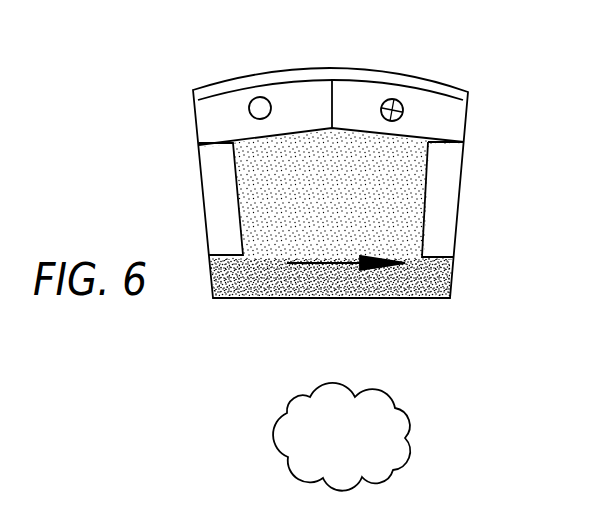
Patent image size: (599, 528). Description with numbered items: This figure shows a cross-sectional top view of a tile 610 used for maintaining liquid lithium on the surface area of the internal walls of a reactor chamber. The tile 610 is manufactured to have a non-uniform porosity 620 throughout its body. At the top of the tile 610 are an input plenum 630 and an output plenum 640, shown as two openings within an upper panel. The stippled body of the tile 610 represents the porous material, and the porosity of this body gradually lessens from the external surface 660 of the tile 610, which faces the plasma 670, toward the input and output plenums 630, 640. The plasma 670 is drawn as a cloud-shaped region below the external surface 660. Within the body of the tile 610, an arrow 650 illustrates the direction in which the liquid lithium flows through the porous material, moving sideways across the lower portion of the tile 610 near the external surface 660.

The tile 610 is at (283, 323).
The non-uniform porosity 620 is at (287, 195).
The input plenum 630 is at (267, 97).
The output plenum 640 is at (397, 100).
The arrow 650 is at (308, 264).
The external surface 660 is at (397, 300).
The plasma 670 is at (357, 447).